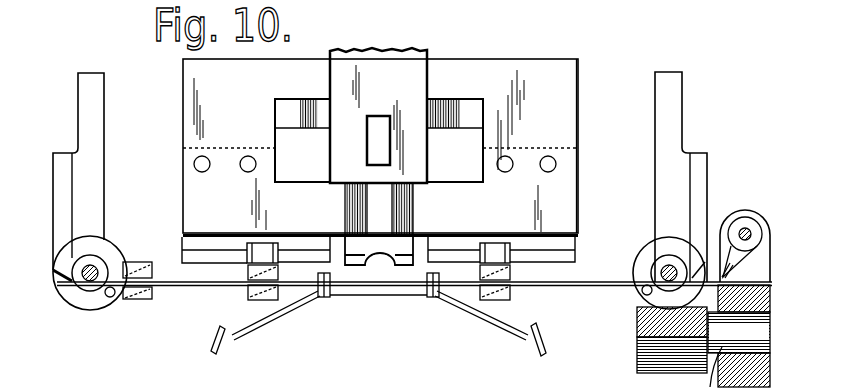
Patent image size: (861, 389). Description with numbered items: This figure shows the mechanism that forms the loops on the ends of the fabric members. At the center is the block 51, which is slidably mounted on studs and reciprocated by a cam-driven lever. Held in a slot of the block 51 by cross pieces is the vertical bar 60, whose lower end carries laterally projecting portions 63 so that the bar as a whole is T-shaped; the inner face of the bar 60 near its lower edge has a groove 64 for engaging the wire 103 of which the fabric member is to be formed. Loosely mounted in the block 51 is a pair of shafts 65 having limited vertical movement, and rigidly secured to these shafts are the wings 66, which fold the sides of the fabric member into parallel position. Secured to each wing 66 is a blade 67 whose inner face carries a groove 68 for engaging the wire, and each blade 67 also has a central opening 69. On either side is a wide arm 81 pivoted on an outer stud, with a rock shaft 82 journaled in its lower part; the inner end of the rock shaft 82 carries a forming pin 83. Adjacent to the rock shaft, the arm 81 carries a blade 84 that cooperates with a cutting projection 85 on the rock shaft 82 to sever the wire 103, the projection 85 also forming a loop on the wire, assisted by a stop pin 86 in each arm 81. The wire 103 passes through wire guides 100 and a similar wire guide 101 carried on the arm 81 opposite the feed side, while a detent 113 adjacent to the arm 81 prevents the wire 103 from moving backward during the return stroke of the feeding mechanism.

The block 51 is at (378, 115).
The vertical bar 60 is at (379, 209).
The laterally projecting portions 63 is at (415, 237).
The groove 64 is at (357, 264).
The shafts 65 is at (317, 98).
The wings 66 is at (380, 147).
The blade 67 is at (557, 266).
The groove 68 is at (378, 248).
The central opening 69 is at (285, 248).
The wide arm 81 is at (83, 108).
The rock shaft 82 is at (87, 255).
The forming pin 83 is at (93, 269).
The blade 84 is at (58, 200).
The cutting projection 85 is at (88, 291).
The stop pin 86 is at (110, 297).
The wire guides 100 is at (260, 294).
The wire guide 101 is at (142, 293).
The wire 103 is at (590, 287).
The detent 113 is at (745, 222).